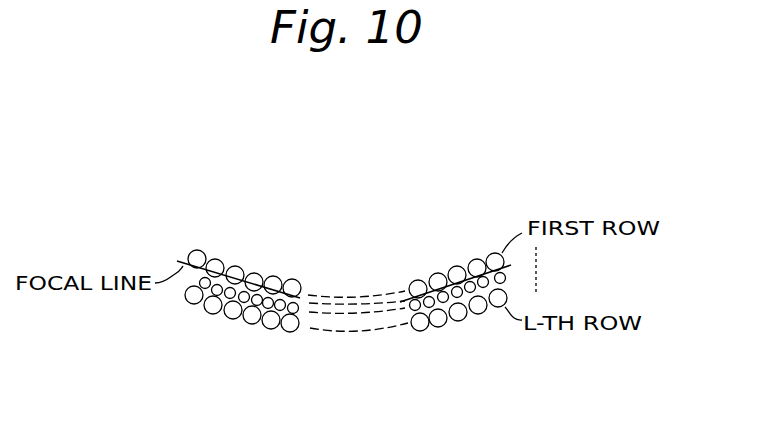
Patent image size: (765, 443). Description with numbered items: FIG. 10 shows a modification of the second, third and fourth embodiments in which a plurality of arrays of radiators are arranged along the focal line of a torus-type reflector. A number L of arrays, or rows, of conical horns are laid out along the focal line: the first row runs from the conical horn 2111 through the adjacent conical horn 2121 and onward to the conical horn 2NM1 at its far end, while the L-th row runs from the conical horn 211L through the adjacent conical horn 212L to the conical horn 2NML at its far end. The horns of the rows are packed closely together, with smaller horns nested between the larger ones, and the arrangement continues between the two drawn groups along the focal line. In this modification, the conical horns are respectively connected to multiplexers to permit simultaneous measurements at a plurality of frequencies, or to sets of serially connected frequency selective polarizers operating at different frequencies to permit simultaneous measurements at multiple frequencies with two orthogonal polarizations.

The conical horn 2111 is at (205, 250).
The conical horn 2121 is at (227, 260).
The conical horn 211L is at (195, 306).
The conical horn 212L is at (215, 314).
The conical horn 2NM1 is at (488, 251).
The conical horn 2NML is at (498, 307).